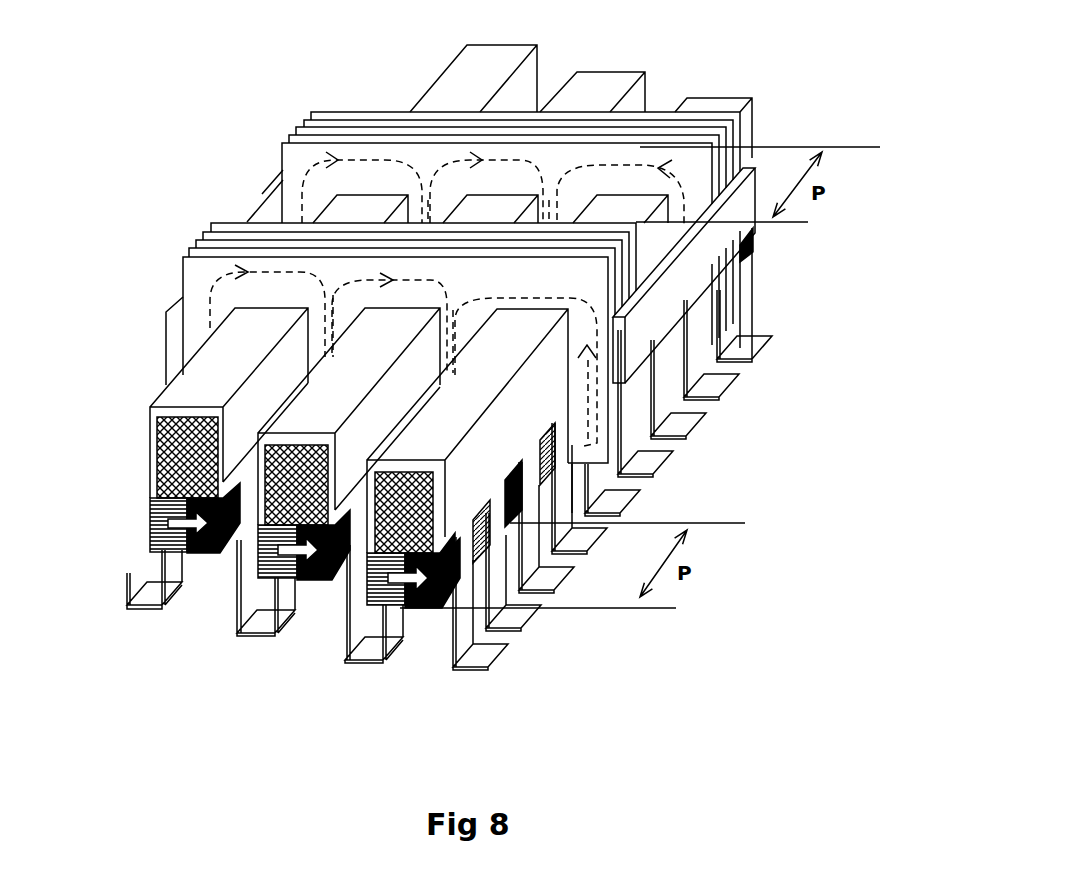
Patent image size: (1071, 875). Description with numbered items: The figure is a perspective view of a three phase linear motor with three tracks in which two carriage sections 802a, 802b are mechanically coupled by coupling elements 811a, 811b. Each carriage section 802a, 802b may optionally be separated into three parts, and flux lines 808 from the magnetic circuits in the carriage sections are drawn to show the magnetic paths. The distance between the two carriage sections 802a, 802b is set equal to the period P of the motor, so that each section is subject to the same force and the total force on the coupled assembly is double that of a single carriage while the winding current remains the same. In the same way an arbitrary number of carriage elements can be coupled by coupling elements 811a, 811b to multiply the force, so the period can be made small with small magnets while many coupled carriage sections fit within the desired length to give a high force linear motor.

The flux lines 808 is at (350, 157).
The carriage section 802a is at (300, 163).
The carriage section 802b is at (337, 270).
The coupling element 811a is at (715, 243).
The coupling element 811b is at (263, 202).